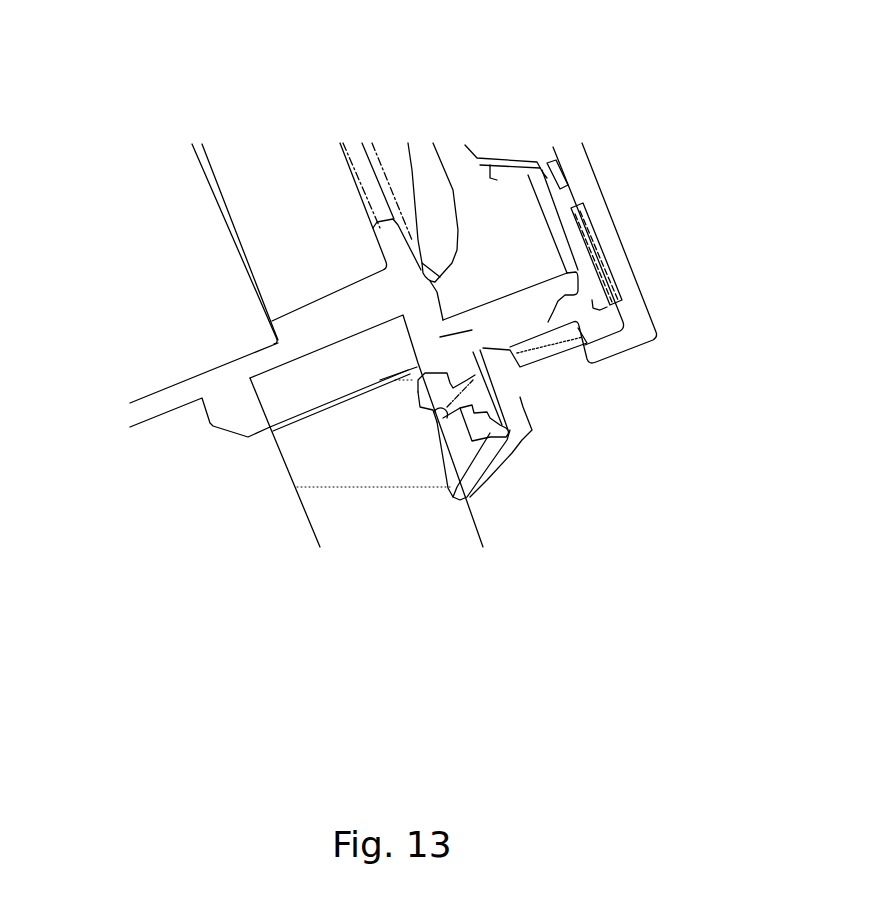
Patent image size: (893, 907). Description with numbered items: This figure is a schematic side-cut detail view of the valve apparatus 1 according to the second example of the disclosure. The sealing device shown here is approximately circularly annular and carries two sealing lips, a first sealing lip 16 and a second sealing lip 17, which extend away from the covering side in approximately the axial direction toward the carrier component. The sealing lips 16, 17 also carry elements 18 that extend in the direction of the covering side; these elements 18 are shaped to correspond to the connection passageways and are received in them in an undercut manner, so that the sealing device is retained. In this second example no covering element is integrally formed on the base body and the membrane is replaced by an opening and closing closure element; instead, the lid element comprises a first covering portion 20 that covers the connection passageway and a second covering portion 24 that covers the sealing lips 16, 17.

The valve apparatus 1 is at (90, 73).
The first sealing lip 16 is at (415, 397).
The second sealing lip 17 is at (440, 462).
The elements 18 is at (478, 392).
The first covering portion 20 is at (485, 367).
The second covering portion 24 is at (482, 463).